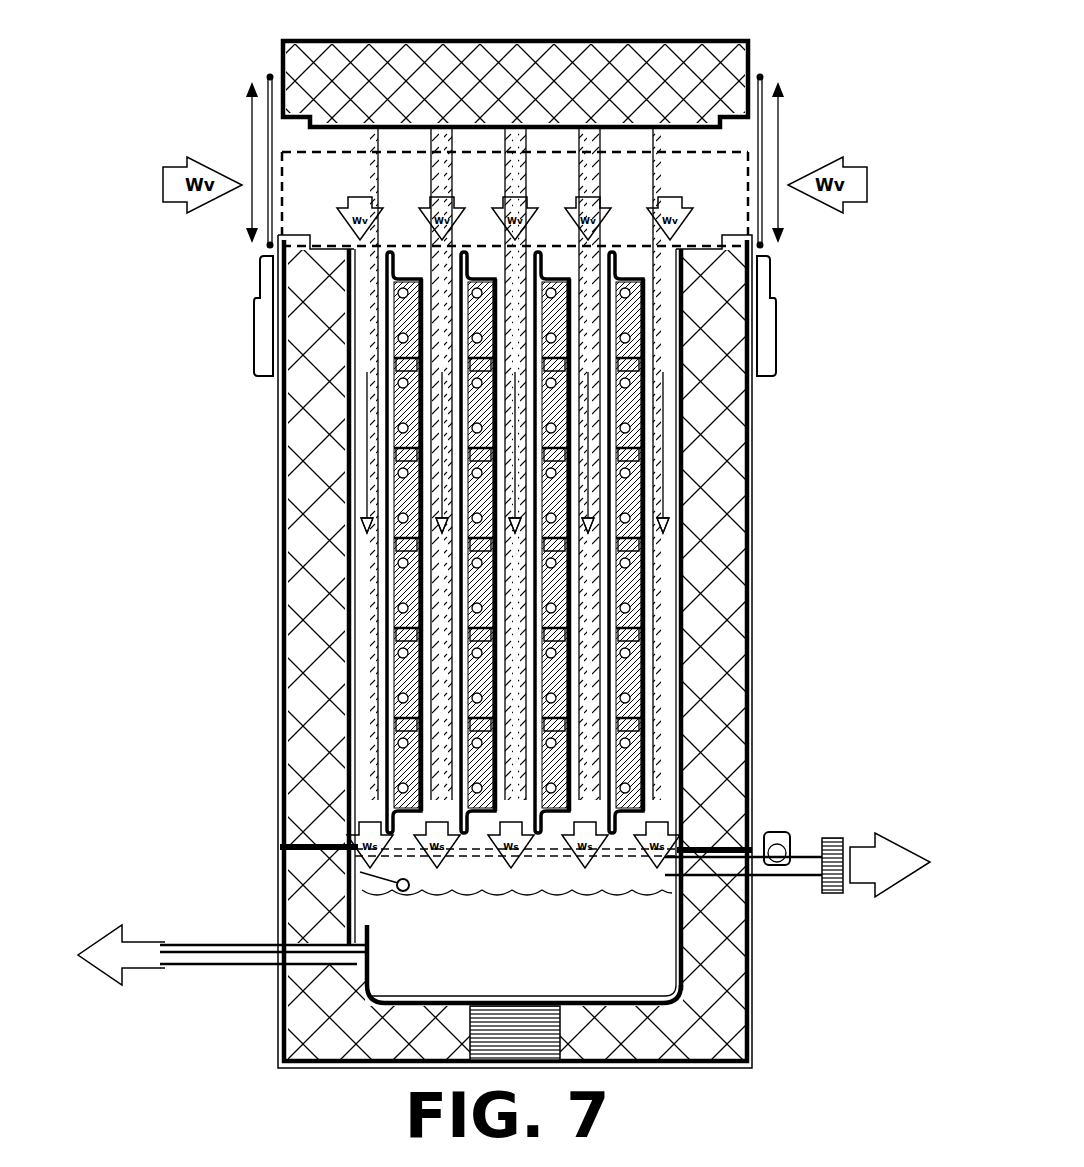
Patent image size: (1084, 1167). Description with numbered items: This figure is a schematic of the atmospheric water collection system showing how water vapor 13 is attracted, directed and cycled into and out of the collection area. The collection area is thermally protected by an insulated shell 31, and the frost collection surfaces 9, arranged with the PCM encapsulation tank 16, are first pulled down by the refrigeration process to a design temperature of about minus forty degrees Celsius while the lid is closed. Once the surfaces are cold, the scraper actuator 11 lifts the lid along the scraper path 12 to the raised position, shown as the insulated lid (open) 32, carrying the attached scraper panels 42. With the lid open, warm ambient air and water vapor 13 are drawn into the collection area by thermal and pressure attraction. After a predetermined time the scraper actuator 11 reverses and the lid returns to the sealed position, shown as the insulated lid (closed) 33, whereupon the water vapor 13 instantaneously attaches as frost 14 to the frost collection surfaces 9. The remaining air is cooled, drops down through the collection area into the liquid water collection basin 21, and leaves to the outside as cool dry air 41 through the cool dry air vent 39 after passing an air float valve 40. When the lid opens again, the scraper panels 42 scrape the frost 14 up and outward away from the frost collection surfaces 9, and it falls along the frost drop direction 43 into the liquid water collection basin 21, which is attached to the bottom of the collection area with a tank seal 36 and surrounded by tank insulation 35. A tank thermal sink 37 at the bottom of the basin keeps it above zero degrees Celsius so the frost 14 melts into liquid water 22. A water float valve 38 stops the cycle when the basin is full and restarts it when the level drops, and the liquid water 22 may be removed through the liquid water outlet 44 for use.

The frost collection surface 9 is at (398, 655).
The scraper actuator 11 is at (265, 308).
The scraper path 12 is at (251, 84).
The water vapor 13 is at (345, 205).
The frost 14 is at (410, 805).
The PCM encapsulation tank 16 is at (395, 425).
The liquid water collection basin 21 is at (690, 930).
The liquid water 22 is at (600, 955).
The insulated shell 31 is at (302, 615).
The insulated lid (open) 32 is at (330, 62).
The insulated lid (closed) 33 is at (772, 244).
The tank insulation 35 is at (720, 960).
The tank seal 36 is at (350, 848).
The tank thermal sink 37 is at (590, 1040).
The water float valve 38 is at (358, 874).
The cool dry air vent 39 is at (834, 838).
The air float valve 40 is at (778, 832).
The cool dry air 41 is at (882, 882).
The scraper panel 42 is at (378, 420).
The frost drop direction 43 is at (362, 522).
The liquid water outlet 44 is at (240, 945).